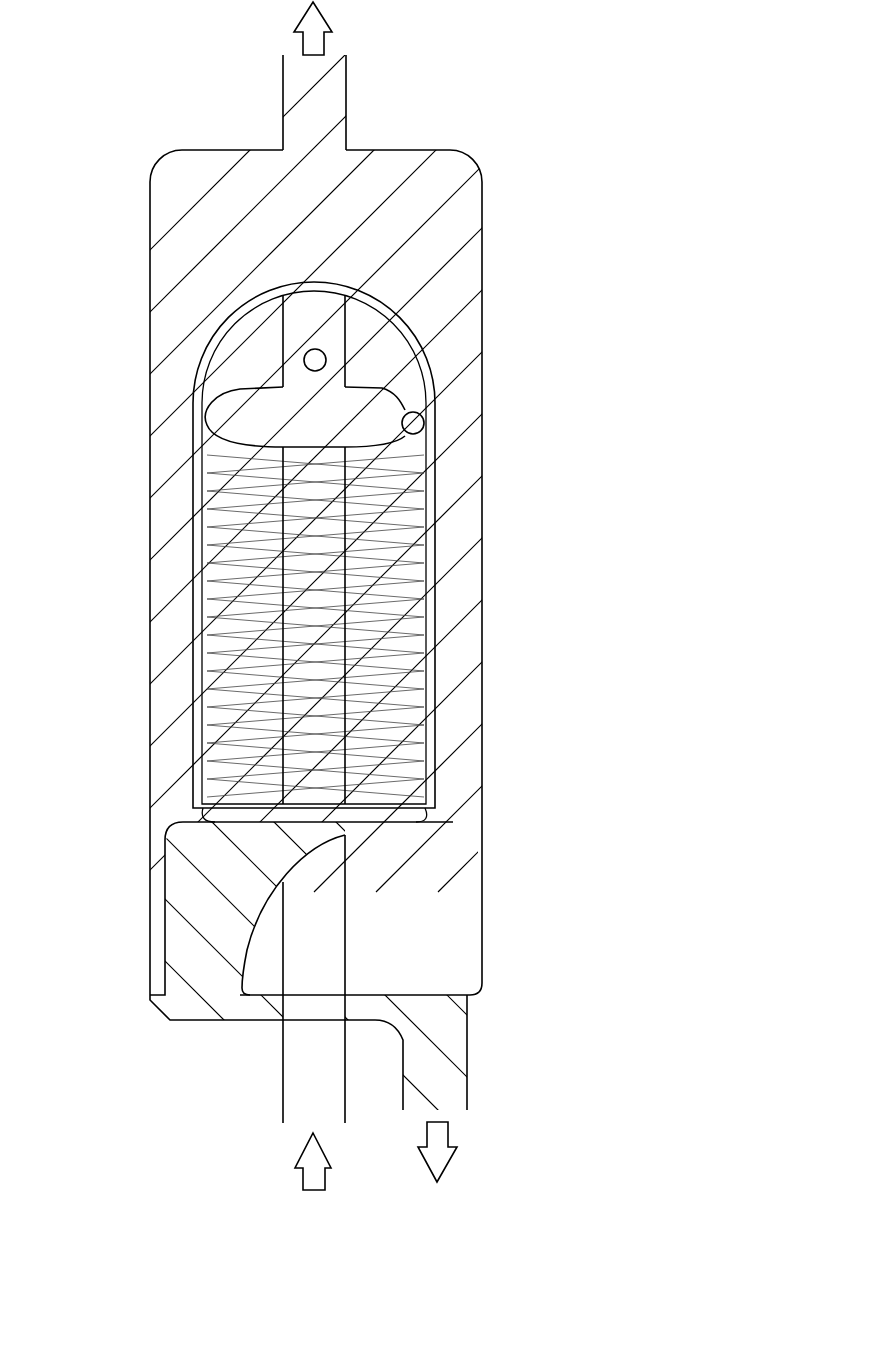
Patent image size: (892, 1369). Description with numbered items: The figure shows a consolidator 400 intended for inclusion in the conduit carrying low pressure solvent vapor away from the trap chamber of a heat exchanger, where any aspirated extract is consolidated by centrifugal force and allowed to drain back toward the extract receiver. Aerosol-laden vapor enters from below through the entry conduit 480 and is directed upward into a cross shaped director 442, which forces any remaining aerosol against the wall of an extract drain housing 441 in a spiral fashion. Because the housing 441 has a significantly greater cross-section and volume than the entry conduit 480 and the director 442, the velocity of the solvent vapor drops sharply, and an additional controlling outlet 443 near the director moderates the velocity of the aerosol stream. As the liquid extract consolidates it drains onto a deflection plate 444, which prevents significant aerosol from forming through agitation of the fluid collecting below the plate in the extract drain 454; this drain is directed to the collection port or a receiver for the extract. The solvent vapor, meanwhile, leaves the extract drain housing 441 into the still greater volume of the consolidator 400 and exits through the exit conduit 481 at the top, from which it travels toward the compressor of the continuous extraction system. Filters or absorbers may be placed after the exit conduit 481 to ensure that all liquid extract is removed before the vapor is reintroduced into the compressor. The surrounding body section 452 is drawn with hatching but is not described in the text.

The consolidator 400 is at (230, 83).
The exit conduit 481 is at (330, 100).
The upper housing 452 is at (412, 215).
The controlling outlet 443 is at (326, 360).
The cross shaped director 442 is at (425, 428).
The extract drain housing 441 is at (435, 758).
The deflection plate 444 is at (370, 832).
The extract drain 454 is at (450, 1037).
The entry conduit 480 is at (283, 1057).